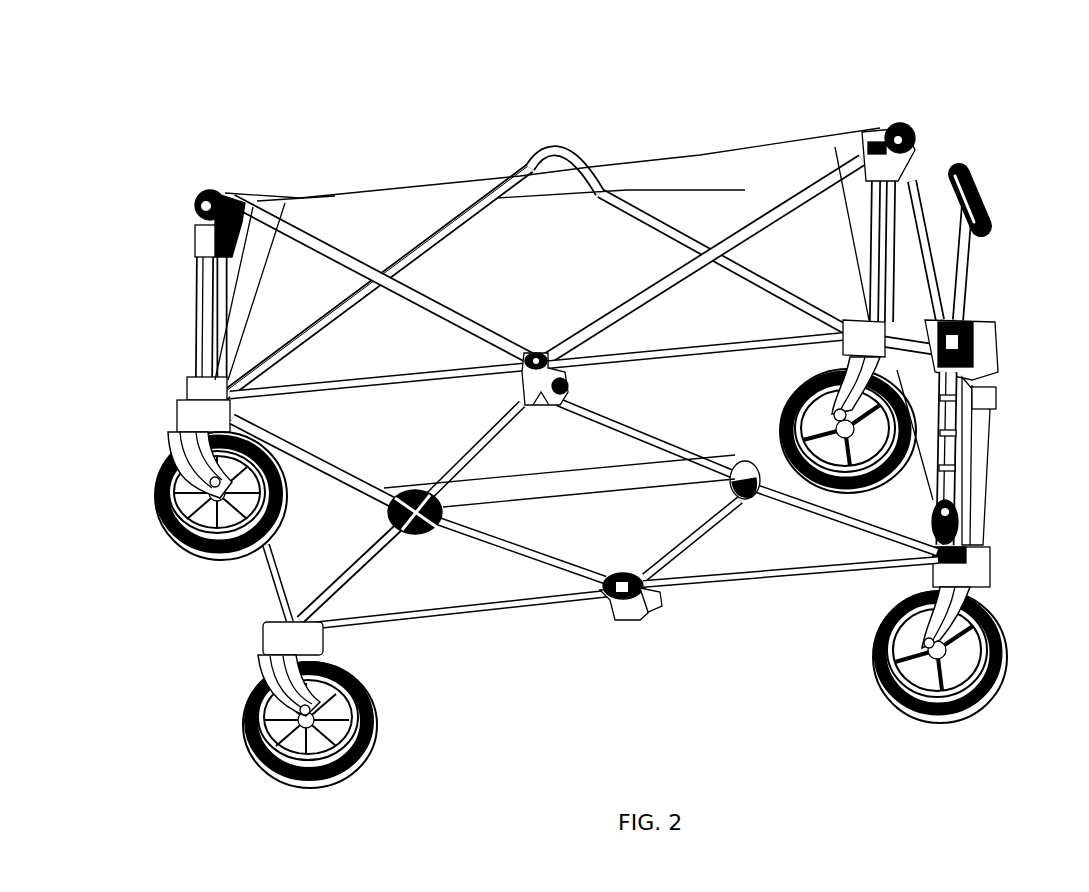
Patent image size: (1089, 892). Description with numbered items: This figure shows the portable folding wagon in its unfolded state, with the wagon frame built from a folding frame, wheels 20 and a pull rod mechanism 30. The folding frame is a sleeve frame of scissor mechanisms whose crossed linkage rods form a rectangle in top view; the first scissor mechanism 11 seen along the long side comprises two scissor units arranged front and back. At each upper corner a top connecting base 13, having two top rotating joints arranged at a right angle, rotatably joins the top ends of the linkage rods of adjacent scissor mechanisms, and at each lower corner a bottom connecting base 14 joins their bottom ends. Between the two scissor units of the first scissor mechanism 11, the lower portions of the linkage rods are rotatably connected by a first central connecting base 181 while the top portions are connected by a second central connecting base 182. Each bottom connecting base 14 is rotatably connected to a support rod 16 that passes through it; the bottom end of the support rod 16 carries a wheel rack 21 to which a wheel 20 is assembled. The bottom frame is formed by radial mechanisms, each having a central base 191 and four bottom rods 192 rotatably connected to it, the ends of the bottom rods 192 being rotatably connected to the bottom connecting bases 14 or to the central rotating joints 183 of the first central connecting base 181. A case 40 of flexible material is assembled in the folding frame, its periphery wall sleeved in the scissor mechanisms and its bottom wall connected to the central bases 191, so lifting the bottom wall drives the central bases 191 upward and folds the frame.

The first scissor mechanism 11 is at (418, 240).
The top connecting base 13 is at (903, 122).
The bottom connecting base 14 is at (857, 342).
The support rod 16 is at (886, 243).
The wheel 20 is at (173, 540).
The wheel rack 21 is at (177, 443).
The pull rod mechanism 30 is at (973, 272).
The case 40 is at (283, 302).
The first central connecting base 181 is at (544, 352).
The second central connecting base 182 is at (553, 177).
The central rotating joint 183 is at (657, 598).
The central base 191 is at (406, 496).
The bottom rod 192 is at (525, 568).